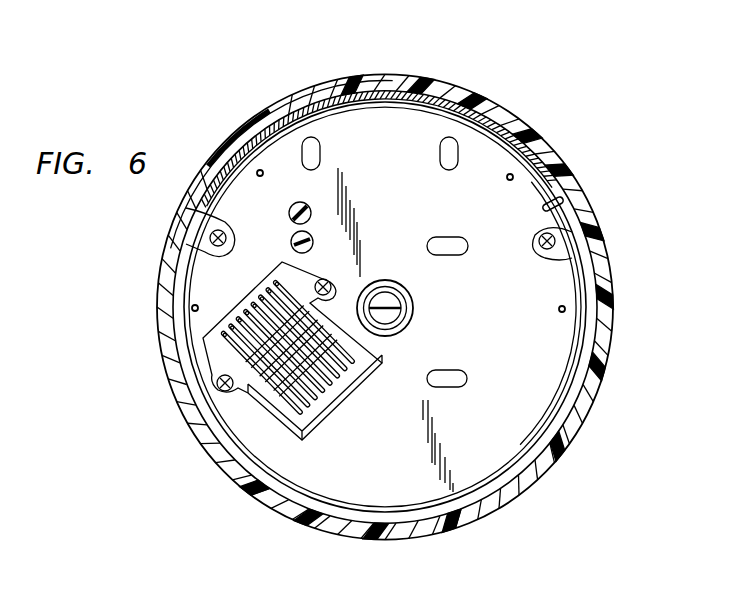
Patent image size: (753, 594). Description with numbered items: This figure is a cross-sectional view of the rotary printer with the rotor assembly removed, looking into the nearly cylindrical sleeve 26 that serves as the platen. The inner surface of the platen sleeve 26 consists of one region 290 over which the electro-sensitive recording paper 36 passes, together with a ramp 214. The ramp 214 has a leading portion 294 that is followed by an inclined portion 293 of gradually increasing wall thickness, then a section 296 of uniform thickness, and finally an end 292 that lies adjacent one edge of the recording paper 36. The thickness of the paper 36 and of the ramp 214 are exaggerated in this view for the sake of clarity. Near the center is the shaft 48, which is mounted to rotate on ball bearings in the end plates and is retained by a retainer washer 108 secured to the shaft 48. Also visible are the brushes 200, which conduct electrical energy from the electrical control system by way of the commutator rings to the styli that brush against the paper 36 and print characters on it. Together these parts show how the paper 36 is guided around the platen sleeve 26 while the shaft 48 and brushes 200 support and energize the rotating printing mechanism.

The nearly cylindrical sleeve 26 is at (337, 90).
The electro-sensitive paper 36 is at (400, 78).
The region 290 is at (438, 90).
The end 292 is at (563, 202).
The section of uniform thickness 296 is at (575, 273).
The inclined portion 293 is at (575, 358).
The leading portion 294 is at (550, 440).
The ramp 214 is at (556, 294).
The retainer washer 108 is at (390, 281).
The shaft 48 is at (389, 306).
The brushes 200 is at (340, 394).